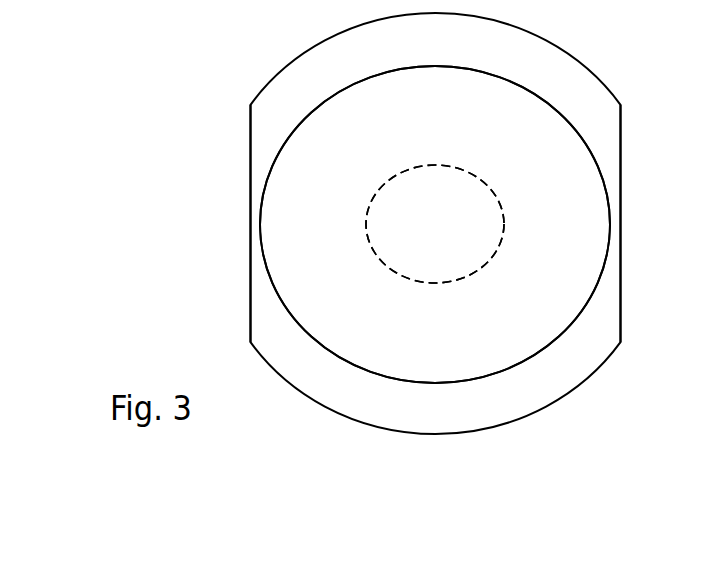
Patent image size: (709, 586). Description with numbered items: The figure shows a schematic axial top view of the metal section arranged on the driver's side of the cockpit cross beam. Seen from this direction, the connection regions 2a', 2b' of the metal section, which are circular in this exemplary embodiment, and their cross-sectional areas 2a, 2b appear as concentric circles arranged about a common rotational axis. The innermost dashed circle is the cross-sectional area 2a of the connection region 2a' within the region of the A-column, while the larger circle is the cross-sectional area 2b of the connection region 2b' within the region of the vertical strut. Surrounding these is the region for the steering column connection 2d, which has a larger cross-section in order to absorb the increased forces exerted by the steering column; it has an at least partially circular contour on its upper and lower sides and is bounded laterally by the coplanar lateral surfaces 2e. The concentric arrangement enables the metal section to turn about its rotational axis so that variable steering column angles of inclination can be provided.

The cross-sectional area 2a is at (435, 224).
The connection region 2a' is at (458, 244).
The cross-sectional area 2b is at (435, 224).
The connection region 2b' is at (474, 224).
The region for the steering column connection 2d is at (602, 80).
The coplanar lateral surfaces 2e is at (250, 223).